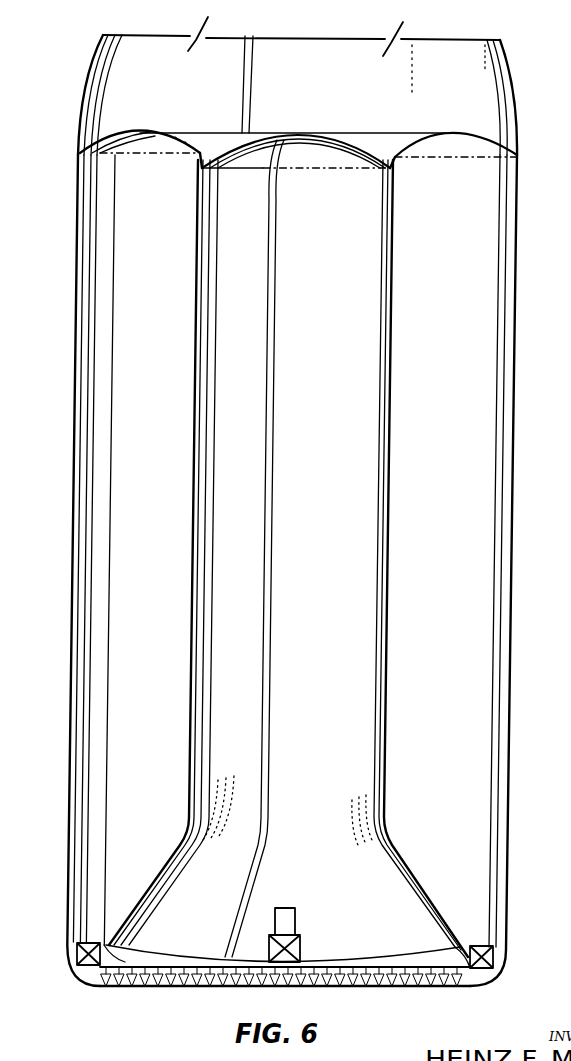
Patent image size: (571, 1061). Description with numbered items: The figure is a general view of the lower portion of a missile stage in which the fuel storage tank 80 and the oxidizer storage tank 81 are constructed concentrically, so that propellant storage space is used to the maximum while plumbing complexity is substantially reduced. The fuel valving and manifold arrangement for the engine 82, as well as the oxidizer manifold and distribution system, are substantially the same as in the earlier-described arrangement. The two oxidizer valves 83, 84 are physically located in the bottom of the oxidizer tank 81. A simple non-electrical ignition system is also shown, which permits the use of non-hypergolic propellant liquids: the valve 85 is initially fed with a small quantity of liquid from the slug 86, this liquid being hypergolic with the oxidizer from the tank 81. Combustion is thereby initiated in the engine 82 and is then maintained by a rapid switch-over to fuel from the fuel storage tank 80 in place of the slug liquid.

The fuel storage tank 80 is at (288, 548).
The oxidizer storage tank 81 is at (472, 570).
The engine 82 is at (195, 988).
The oxidizer valve 83 is at (77, 955).
The oxidizer valve 84 is at (496, 963).
The valve 85 is at (302, 949).
The slug 86 is at (296, 916).